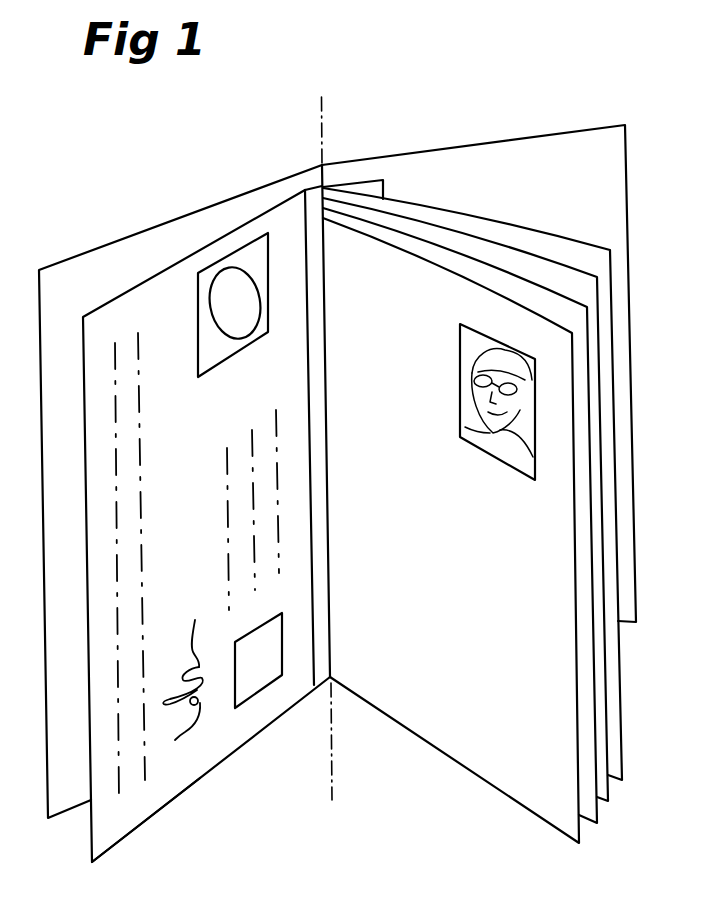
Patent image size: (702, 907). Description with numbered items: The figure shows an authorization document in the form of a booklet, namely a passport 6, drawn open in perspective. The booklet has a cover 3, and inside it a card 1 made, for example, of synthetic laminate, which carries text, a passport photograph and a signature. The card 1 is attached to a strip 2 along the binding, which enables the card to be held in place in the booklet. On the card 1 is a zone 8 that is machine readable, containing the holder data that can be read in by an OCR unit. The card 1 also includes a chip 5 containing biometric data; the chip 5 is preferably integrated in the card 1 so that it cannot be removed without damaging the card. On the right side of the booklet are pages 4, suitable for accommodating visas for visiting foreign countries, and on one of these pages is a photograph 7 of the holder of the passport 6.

The card 1 is at (206, 526).
The strip 2 is at (322, 679).
The cover 3 is at (83, 275).
The pages 4 is at (547, 378).
The chip 5 is at (253, 672).
The passport 6 is at (365, 483).
The photograph 7 is at (475, 435).
The machine readable zone 8 is at (120, 790).